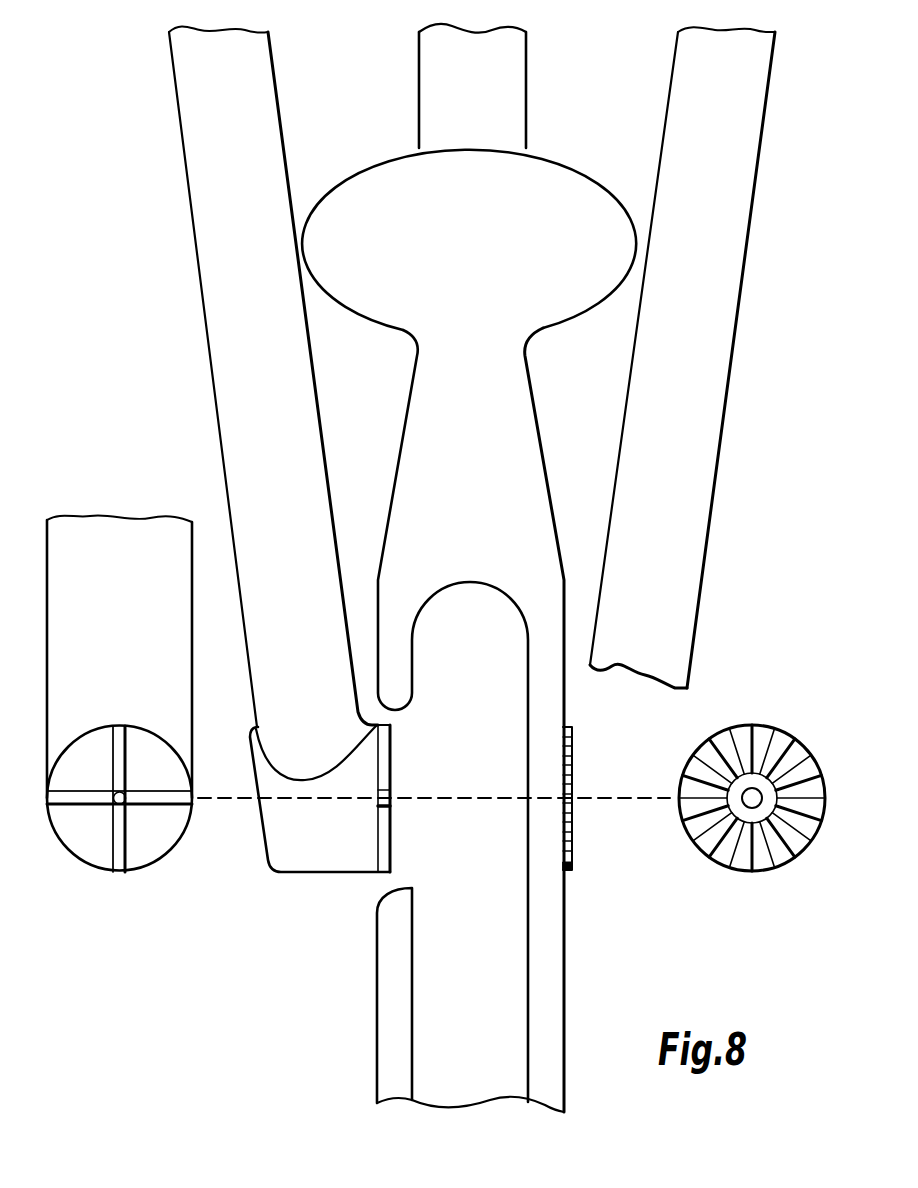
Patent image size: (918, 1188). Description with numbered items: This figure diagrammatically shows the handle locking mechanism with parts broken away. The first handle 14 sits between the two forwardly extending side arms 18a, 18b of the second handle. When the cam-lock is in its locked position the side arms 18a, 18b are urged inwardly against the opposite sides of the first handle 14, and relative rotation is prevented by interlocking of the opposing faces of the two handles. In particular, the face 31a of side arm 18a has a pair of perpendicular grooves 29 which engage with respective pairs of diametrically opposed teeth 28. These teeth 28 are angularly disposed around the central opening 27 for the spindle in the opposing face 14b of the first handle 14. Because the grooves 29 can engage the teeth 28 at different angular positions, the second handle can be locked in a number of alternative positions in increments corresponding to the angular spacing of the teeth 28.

The first handle 14 is at (430, 443).
The opposing face of the first handle 14b is at (572, 870).
The side arm of the second handle 18a is at (228, 352).
The side arm of the second handle 18b is at (714, 352).
The central opening 27 is at (123, 803).
The teeth 28 is at (573, 793).
The perpendicular grooves 29 is at (119, 763).
The face of the side arm 31a is at (140, 868).